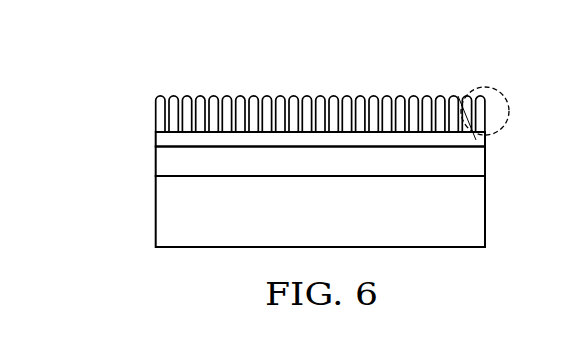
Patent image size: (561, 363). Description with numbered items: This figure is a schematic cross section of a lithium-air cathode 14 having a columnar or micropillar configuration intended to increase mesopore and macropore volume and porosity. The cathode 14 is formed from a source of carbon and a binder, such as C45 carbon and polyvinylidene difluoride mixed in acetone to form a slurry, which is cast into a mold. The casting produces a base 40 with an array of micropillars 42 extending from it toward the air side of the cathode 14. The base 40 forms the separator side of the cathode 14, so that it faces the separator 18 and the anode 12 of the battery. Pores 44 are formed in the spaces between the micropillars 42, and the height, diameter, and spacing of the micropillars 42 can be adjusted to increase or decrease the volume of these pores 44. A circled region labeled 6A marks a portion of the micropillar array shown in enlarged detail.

The anode 12 is at (157, 210).
The separator 18 is at (157, 165).
The cathode 14 is at (157, 140).
The base 40 is at (155, 133).
The pores 44 is at (207, 97).
The micropillars 42 is at (298, 98).
The detail region of FIG. 6A is at (480, 83).